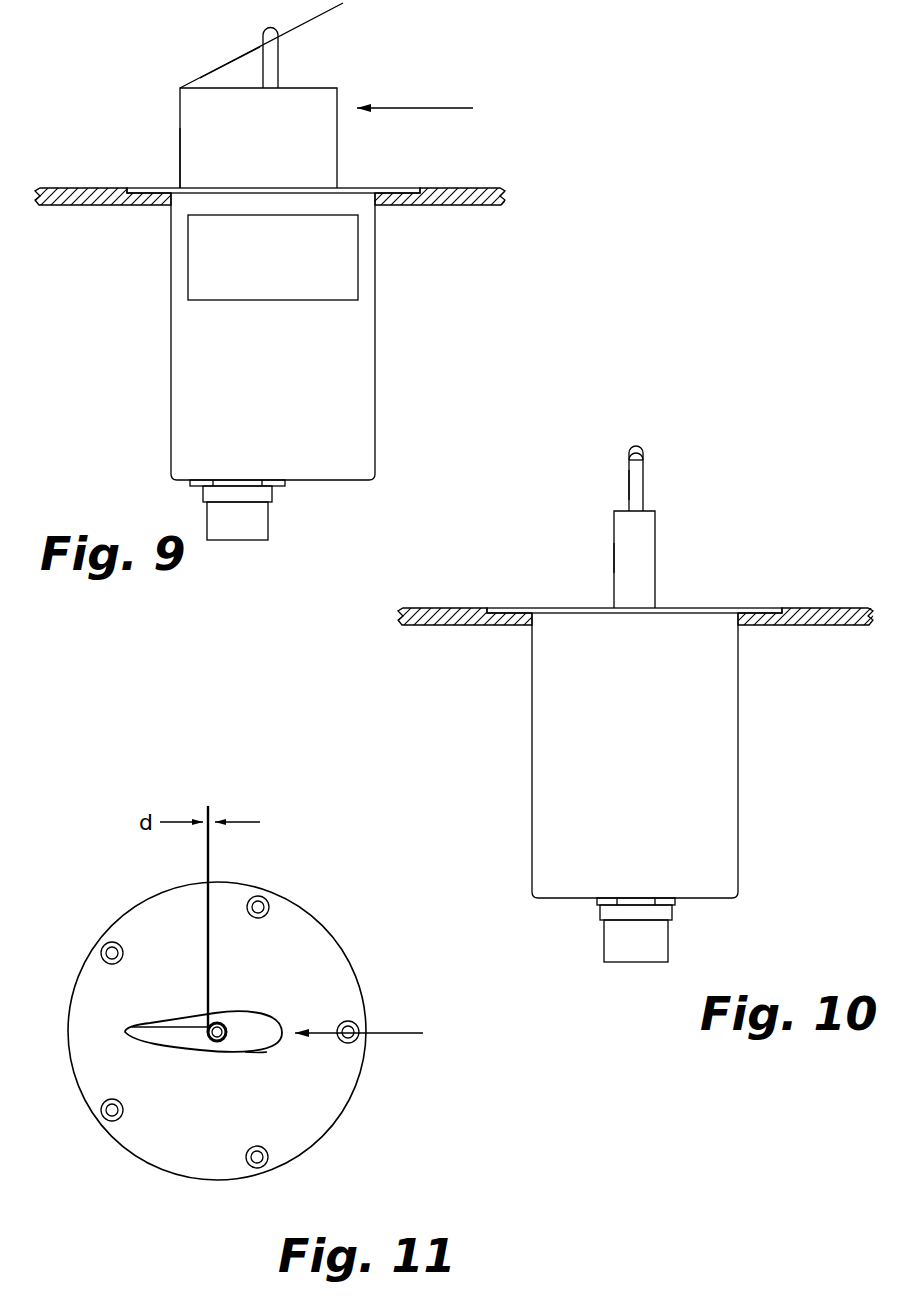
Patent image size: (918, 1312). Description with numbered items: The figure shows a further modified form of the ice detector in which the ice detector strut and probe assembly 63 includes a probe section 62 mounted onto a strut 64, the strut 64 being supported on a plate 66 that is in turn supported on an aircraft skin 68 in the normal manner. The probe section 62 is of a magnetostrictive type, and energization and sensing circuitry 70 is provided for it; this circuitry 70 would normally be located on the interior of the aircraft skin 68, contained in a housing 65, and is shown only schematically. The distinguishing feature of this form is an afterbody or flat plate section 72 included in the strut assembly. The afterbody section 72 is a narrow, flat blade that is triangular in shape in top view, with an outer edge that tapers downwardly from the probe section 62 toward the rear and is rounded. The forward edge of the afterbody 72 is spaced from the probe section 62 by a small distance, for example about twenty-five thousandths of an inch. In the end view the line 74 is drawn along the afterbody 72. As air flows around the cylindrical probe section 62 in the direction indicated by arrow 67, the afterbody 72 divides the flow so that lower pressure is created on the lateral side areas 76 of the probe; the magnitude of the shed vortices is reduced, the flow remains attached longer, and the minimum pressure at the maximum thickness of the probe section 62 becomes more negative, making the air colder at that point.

In FIG. 9, the probe section 62 is at (343, 3).
In FIG. 10, the probe section 62 is at (645, 484).
In FIG. 11, the probe section 62 is at (225, 1040).
In FIG. 9, the ice detector strut and probe assembly 63 is at (178, 128).
In FIG. 10, the ice detector strut and probe assembly 63 is at (613, 543).
In FIG. 9, the strut 64 is at (322, 102).
In FIG. 10, the strut 64 is at (613, 573).
In FIG. 11, the strut 64 is at (267, 1052).
In FIG. 9, the housing 65 is at (375, 312).
In FIG. 10, the housing 65 is at (562, 727).
In FIG. 9, the plate 66 is at (138, 187).
In FIG. 10, the plate 66 is at (695, 607).
In FIG. 11, the plate 66 is at (278, 1020).
In FIG. 9, the arrow 67 is at (430, 108).
In FIG. 11, the arrow 67 is at (380, 1033).
In FIG. 9, the aircraft skin 68 is at (468, 187).
In FIG. 10, the aircraft skin 68 is at (458, 607).
In FIG. 9, the energization and sensing circuitry 70 is at (186, 274).
In FIG. 9, the afterbody section 72 is at (232, 61).
In FIG. 10, the afterbody section 72 is at (619, 478).
In FIG. 11, the afterbody section 72 is at (165, 1040).
In FIG. 11, the vane chord line 74 is at (187, 1045).
In FIG. 9, the lateral side areas 76 is at (270, 58).
In FIG. 11, the lateral side areas 76 is at (224, 1022).